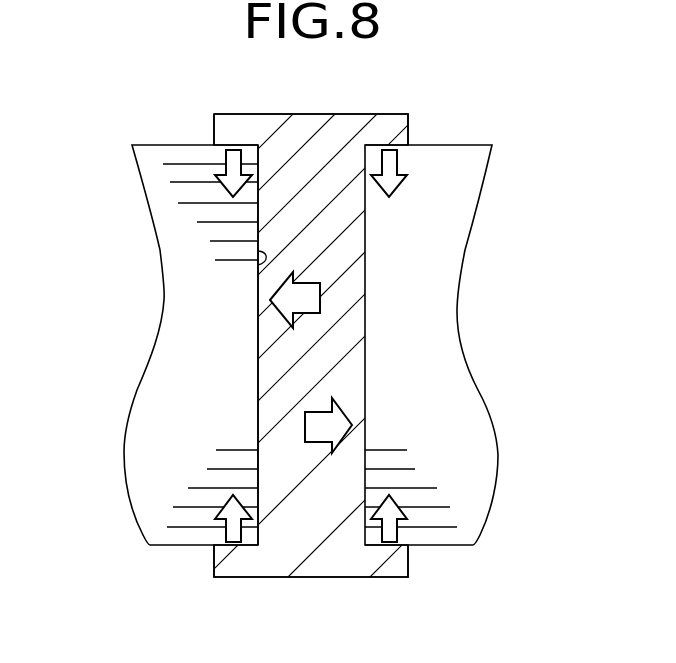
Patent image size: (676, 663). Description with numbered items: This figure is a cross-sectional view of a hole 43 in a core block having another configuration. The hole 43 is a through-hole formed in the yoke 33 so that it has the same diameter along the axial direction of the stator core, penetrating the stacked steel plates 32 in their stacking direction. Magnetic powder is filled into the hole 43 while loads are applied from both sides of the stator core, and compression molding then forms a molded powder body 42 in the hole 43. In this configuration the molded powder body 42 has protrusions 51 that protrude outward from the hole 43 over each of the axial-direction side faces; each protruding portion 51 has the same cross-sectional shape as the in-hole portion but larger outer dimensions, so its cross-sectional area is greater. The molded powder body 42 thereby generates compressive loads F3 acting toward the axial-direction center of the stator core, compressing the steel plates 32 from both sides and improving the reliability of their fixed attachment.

The protrusion 51 is at (396, 114).
The compressive load F3 is at (400, 162).
The steel plate 32 is at (172, 172).
The yoke 33 is at (450, 250).
The molded powder body 42 is at (270, 374).
The hole 43 is at (258, 267).